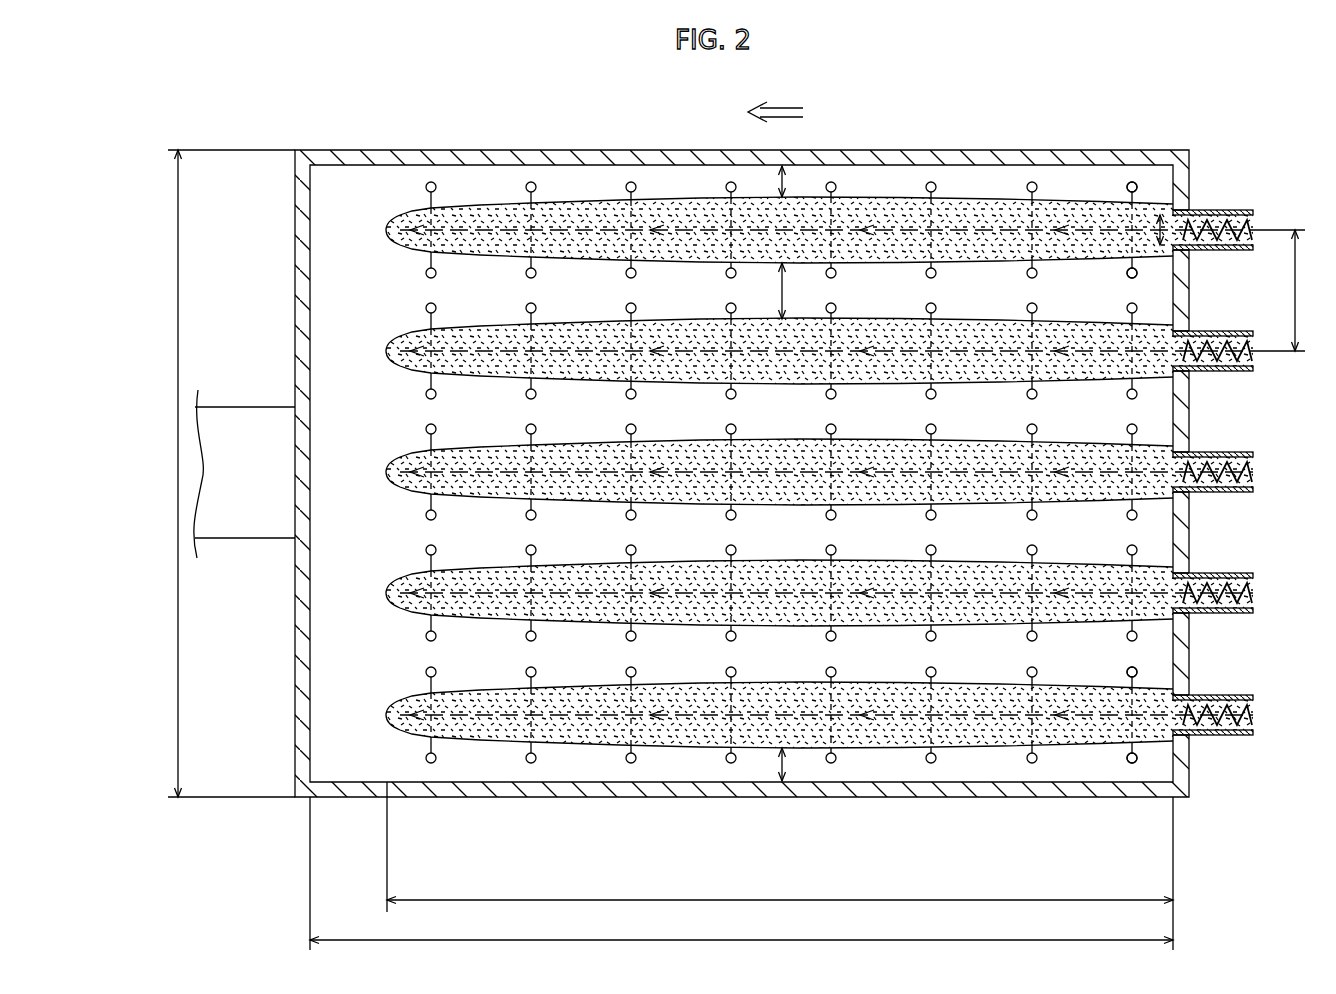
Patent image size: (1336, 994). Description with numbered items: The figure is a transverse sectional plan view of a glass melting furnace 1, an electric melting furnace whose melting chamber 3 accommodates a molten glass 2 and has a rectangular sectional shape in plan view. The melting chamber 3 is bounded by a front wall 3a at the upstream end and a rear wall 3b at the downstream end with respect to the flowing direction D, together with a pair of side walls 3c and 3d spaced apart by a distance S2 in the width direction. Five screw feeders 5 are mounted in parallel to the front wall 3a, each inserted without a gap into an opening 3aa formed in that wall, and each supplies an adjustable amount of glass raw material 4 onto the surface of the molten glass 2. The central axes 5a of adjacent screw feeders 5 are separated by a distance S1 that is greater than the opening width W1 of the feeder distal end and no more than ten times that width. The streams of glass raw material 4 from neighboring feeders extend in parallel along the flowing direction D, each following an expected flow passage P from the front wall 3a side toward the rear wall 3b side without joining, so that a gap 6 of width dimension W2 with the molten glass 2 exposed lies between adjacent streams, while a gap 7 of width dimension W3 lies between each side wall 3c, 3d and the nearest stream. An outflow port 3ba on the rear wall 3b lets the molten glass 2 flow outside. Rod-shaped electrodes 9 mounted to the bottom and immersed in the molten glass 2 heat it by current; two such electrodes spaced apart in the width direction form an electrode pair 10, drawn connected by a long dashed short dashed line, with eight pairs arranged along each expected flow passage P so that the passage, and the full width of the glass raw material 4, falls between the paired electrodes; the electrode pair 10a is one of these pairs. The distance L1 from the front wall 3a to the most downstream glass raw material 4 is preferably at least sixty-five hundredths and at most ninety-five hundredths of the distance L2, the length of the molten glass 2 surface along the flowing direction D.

The glass melting furnace 1 is at (1193, 110).
The molten glass 2 is at (333, 299).
The melting chamber 3 is at (735, 486).
The front wall 3a is at (1180, 538).
The opening 3aa is at (1188, 212).
The rear wall 3b is at (318, 596).
The outflow port 3ba is at (248, 422).
The side wall 3c is at (690, 778).
The side wall 3d is at (676, 170).
The glass raw material 4 is at (955, 199).
The screw feeder 5 is at (1235, 456).
The central axis 5a is at (1250, 209).
The gap 6 is at (567, 469).
The gap 7 is at (567, 473).
The rod-shaped electrode 9 is at (1028, 268).
The electrode pair 10 is at (781, 478).
The electrode pair nearest nozzle 10a is at (1118, 170).
The expected flow passage P is at (596, 240).
The flowing direction D is at (775, 100).
The opening width W1 is at (1158, 210).
The width dimension W2 is at (765, 291).
The width dimension W3 is at (765, 474).
The distance S1 is at (1289, 290).
The distance S2 is at (218, 473).
The distance L1 is at (780, 866).
The distance L2 is at (741, 873).